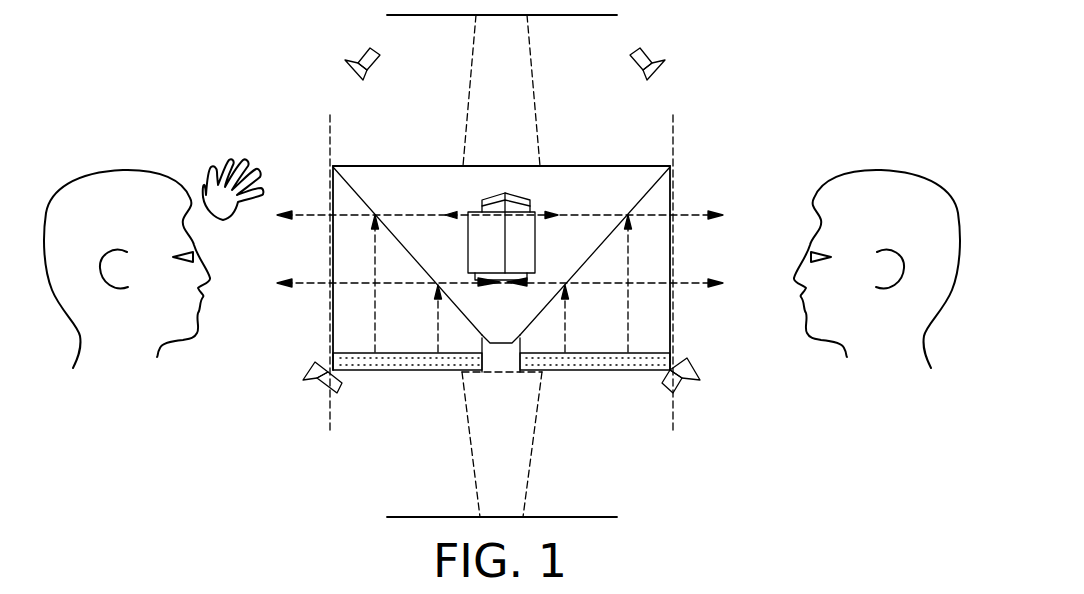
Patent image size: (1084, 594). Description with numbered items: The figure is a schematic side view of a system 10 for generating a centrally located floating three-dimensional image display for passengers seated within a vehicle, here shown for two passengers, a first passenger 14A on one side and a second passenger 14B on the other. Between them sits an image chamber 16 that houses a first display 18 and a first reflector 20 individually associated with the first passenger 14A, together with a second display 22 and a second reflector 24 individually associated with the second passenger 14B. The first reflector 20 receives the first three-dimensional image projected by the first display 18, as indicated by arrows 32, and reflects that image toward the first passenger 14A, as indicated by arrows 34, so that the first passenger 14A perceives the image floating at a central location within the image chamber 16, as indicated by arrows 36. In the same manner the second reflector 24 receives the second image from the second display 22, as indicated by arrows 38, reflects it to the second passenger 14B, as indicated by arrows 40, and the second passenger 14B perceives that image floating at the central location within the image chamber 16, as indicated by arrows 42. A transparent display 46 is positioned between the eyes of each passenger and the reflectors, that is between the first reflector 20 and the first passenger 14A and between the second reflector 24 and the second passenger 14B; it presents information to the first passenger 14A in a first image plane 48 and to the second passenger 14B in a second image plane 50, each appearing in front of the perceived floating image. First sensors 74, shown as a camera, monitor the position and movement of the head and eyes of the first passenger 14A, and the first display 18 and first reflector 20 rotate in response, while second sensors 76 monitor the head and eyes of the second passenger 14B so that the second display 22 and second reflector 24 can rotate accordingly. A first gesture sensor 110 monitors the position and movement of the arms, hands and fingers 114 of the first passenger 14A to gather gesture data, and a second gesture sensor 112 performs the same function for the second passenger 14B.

The system 10 is at (560, 160).
The first passenger 14A is at (115, 187).
The second passenger 14B is at (883, 190).
The image chamber 16 is at (392, 166).
The first display 18 is at (410, 360).
The first reflector 20 is at (337, 191).
The second display 22 is at (600, 362).
The second reflector 24 is at (673, 178).
The arrows 32 is at (375, 334).
The arrows 34 is at (316, 282).
The arrows 36 is at (402, 215).
The arrows 38 is at (565, 313).
The arrows 40 is at (687, 282).
The arrows 42 is at (603, 215).
The transparent display 46 is at (673, 343).
The first image plane 48 is at (330, 140).
The second image plane 50 is at (675, 418).
The first sensors 74 is at (312, 381).
The second sensors 76 is at (690, 385).
The first gesture sensor 110 is at (360, 52).
The second gesture sensor 112 is at (650, 50).
The arms, hands and fingers 114 is at (230, 180).